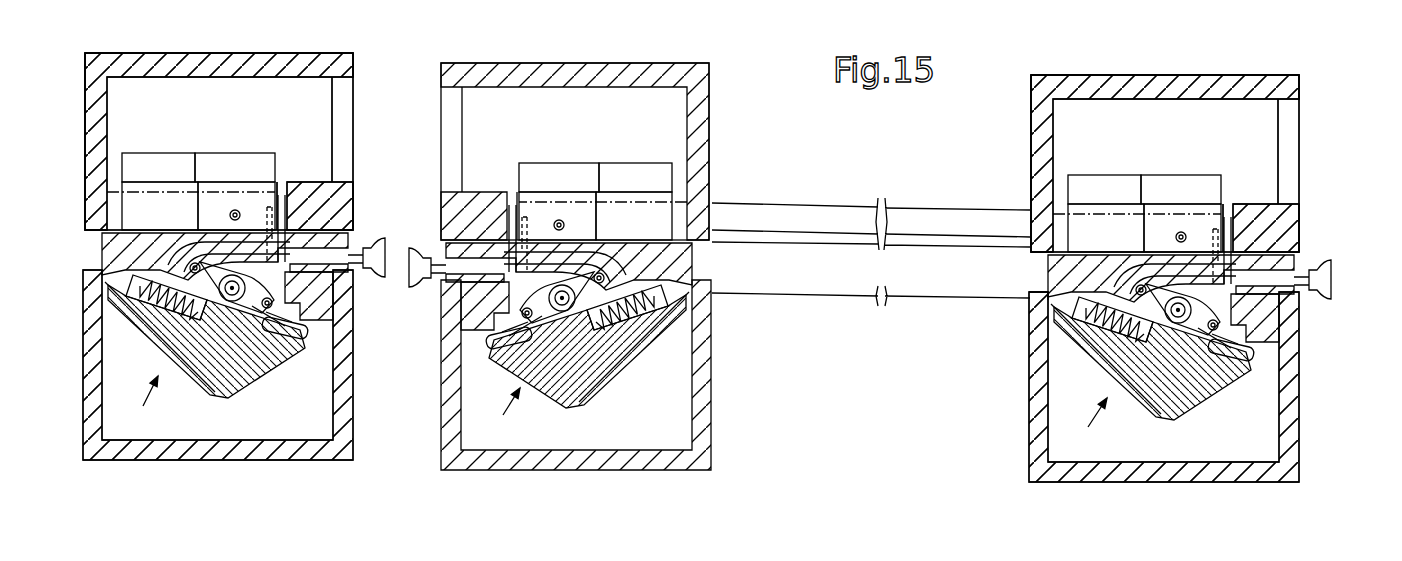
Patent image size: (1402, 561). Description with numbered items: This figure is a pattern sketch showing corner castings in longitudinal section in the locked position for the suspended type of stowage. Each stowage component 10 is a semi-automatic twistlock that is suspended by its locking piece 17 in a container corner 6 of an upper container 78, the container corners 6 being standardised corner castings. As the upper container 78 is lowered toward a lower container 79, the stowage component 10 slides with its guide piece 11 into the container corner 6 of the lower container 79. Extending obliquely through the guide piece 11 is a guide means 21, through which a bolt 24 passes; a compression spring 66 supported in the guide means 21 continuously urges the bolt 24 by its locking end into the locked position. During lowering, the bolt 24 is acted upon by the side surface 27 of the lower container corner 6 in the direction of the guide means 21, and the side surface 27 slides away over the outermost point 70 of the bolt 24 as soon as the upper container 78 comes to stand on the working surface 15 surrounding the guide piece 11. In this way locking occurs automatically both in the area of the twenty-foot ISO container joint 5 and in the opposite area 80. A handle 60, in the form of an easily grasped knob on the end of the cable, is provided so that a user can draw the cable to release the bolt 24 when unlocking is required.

The 20-foot ISO container joint 5 is at (381, 128).
The container corner 6 is at (202, 58).
The stowage component 10 is at (612, 415).
The guide piece 11 is at (236, 372).
The working surface 15 is at (300, 230).
The locking piece 17 is at (247, 160).
The guide means 21 is at (165, 322).
The bolt 24 is at (283, 350).
The side surface 27 is at (450, 300).
The handle 60 is at (409, 243).
The compression spring 66 is at (1060, 322).
The outermost point 70 is at (487, 340).
The upper container 78 is at (918, 140).
The lower container 79 is at (918, 398).
The opposite area 80 is at (1352, 194).